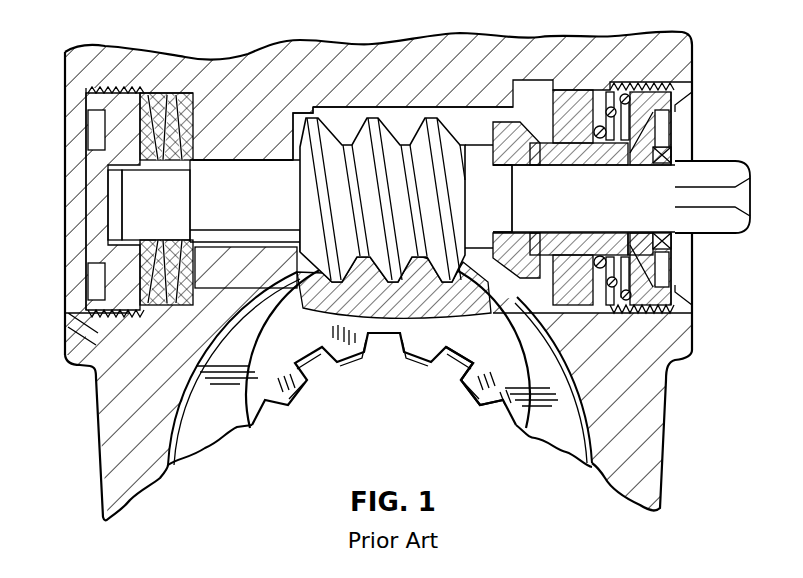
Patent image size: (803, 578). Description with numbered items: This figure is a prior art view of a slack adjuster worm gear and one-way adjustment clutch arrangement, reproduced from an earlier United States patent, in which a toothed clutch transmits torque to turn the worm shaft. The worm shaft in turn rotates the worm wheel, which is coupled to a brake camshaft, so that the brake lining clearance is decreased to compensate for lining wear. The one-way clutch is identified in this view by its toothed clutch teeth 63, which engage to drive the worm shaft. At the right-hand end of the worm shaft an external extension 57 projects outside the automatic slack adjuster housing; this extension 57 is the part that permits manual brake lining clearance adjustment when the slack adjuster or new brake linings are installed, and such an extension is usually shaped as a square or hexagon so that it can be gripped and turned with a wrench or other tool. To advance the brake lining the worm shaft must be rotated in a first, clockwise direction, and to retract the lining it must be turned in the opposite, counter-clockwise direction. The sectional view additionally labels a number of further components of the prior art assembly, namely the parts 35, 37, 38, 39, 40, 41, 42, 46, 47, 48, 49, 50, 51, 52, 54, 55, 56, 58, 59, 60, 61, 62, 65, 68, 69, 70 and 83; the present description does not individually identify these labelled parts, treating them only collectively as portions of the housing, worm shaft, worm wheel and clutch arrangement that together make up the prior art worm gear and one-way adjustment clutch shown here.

The housing 35 is at (215, 72).
The housing lower portion 37 is at (673, 478).
The worm wheel 38 is at (560, 447).
The worm shaft 39 is at (225, 206).
The worm 40 is at (335, 130).
The spline tooth 41 is at (463, 390).
The worm wheel hub 42 is at (180, 470).
The housing cavity 46 is at (422, 106).
The shaft bore 47 is at (255, 160).
The collar 48 is at (188, 205).
The shaft end portion 49 is at (142, 194).
The tapered roller bearing 50 is at (160, 305).
The threaded plug 51 is at (85, 161).
The plug recess 52 is at (99, 305).
The bearing spacer 54 is at (638, 152).
The threaded nut 55 is at (692, 70).
The threaded nut lower 56 is at (692, 296).
The extension 57 is at (712, 236).
The sleeve 58 is at (645, 228).
The bearing ring 59 is at (565, 135).
The spacer ring 60 is at (575, 228).
The bearing block 61 is at (513, 125).
The bearing block lower 62 is at (523, 227).
The toothed clutch teeth 63 is at (503, 227).
The bearing ring lower 65 is at (590, 305).
The spring pins 68 is at (606, 90).
The housing block 69 is at (285, 255).
The housing step 70 is at (298, 112).
The housing wall 83 is at (692, 140).